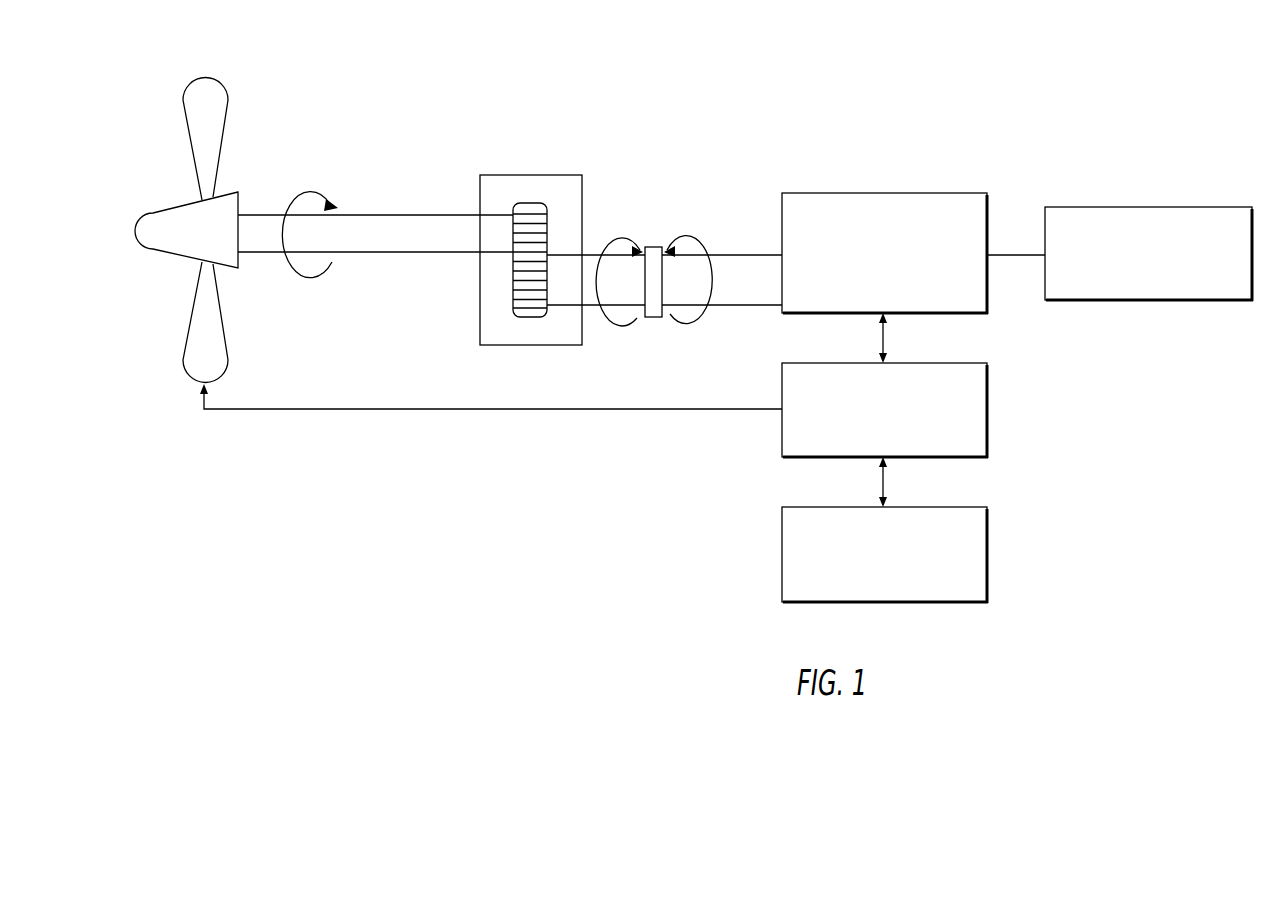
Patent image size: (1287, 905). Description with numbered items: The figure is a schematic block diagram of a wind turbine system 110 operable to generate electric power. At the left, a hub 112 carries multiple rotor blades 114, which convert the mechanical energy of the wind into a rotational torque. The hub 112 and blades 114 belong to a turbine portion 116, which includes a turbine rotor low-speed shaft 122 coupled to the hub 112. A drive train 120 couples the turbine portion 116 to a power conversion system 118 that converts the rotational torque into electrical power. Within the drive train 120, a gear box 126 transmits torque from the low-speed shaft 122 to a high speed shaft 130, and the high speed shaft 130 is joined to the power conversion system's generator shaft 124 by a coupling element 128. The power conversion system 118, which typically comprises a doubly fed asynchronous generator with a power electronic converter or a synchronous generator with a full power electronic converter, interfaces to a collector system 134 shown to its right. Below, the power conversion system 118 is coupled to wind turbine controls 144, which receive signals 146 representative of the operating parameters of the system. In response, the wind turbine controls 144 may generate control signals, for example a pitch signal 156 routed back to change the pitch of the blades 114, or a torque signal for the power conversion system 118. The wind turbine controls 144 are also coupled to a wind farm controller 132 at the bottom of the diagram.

The wind turbine system 110 is at (1165, 45).
The hub 112 is at (178, 214).
The rotor blades 114 is at (216, 123).
The turbine portion 116 is at (355, 146).
The power conversion system 118 is at (841, 200).
The drive train 120 is at (530, 126).
The turbine rotor low-speed shaft 122 is at (398, 243).
The generator shaft 124 is at (737, 257).
The gear box 126 is at (582, 198).
The coupling element 128 is at (652, 246).
The high speed shaft 130 is at (587, 300).
The wind farm controller 132 is at (782, 550).
The collector system 134 is at (1166, 207).
The wind turbine controls 144 is at (795, 362).
The signals 146 is at (885, 338).
The pitch signal 156 is at (400, 411).